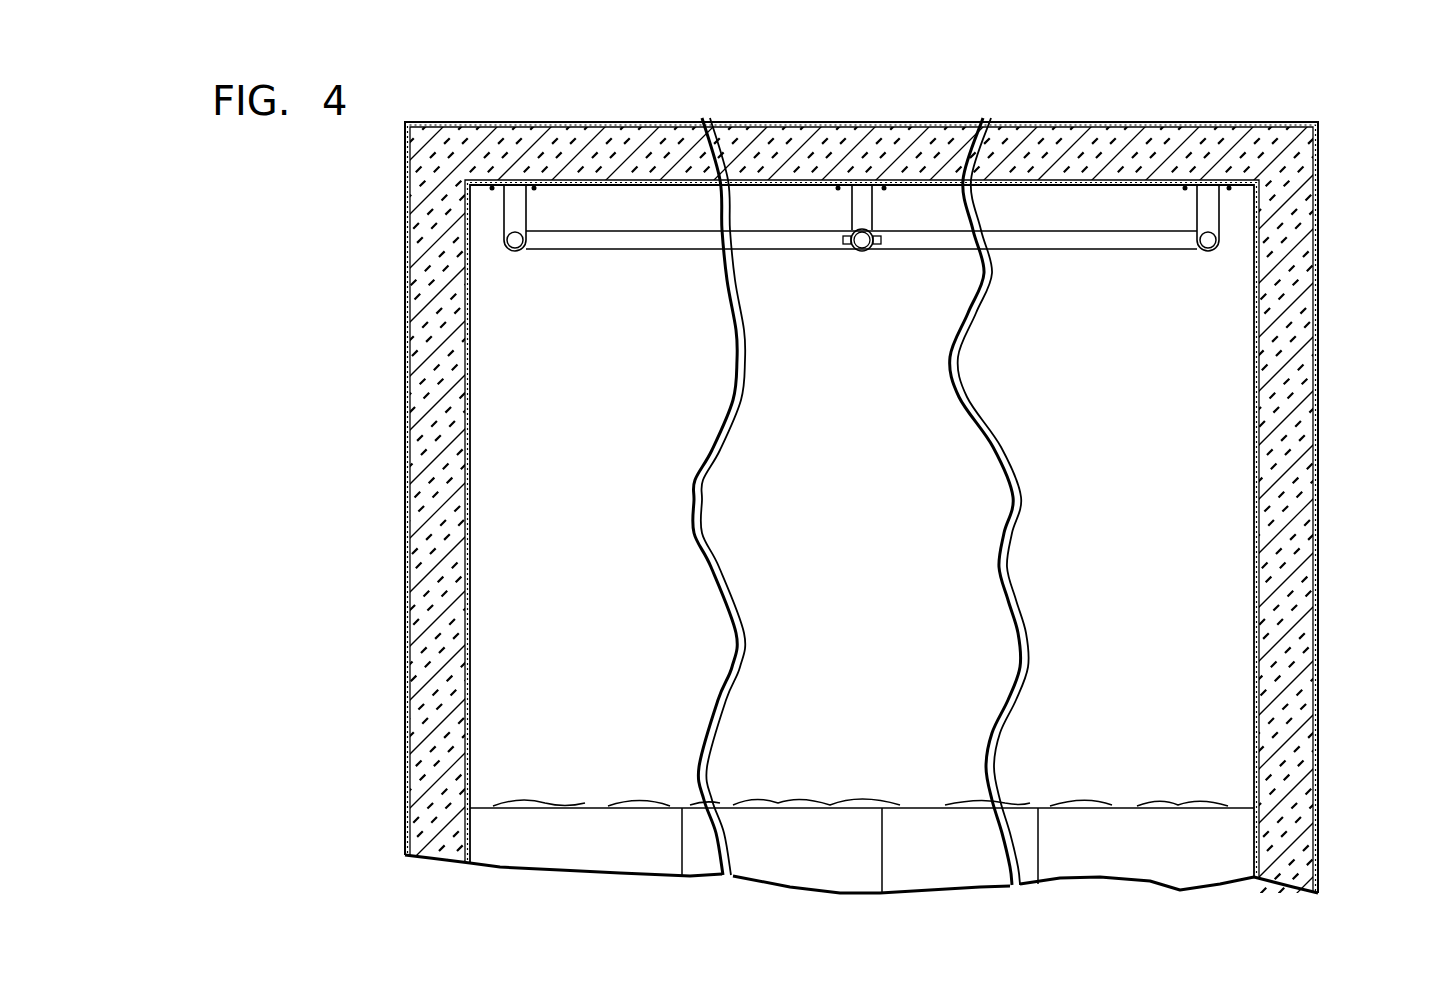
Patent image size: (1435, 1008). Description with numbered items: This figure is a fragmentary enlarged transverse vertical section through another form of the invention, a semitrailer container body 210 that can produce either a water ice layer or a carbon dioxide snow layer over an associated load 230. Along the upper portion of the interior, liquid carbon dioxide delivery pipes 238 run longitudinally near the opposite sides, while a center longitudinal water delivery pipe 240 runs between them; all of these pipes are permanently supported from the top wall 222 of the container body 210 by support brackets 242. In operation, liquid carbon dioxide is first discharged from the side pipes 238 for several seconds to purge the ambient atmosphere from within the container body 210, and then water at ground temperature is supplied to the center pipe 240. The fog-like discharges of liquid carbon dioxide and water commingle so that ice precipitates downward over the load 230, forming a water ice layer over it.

The semitrailer container body 210 is at (1090, 119).
The top wall 222 is at (770, 132).
The support brackets 242 is at (515, 208).
The liquid CO2 delivery pipe 238 is at (517, 250).
The center longitudinal water delivery pipe 240 is at (862, 252).
The load 230 is at (552, 832).